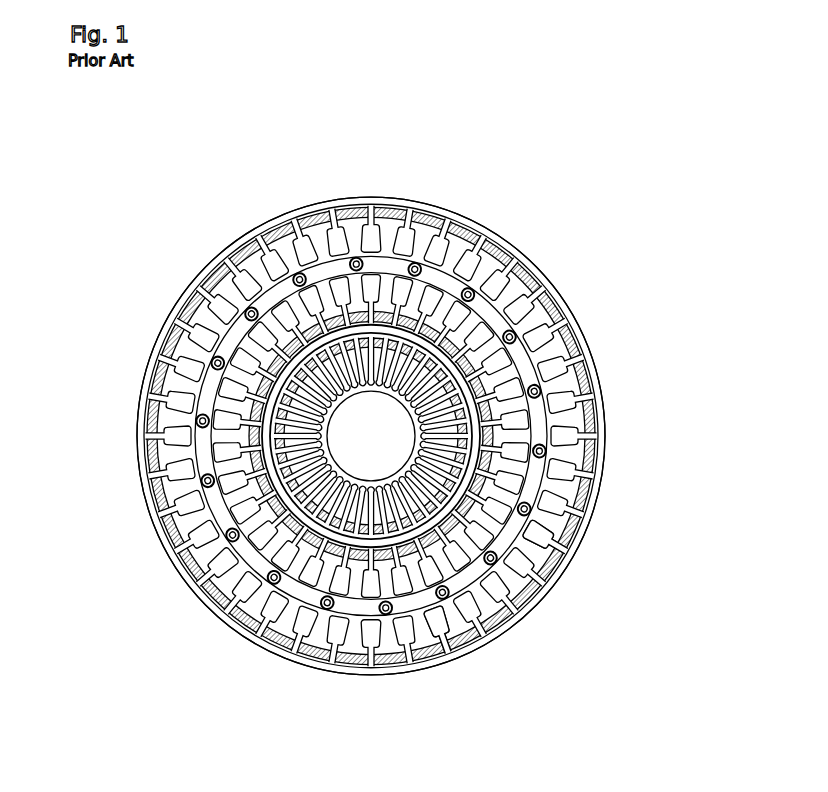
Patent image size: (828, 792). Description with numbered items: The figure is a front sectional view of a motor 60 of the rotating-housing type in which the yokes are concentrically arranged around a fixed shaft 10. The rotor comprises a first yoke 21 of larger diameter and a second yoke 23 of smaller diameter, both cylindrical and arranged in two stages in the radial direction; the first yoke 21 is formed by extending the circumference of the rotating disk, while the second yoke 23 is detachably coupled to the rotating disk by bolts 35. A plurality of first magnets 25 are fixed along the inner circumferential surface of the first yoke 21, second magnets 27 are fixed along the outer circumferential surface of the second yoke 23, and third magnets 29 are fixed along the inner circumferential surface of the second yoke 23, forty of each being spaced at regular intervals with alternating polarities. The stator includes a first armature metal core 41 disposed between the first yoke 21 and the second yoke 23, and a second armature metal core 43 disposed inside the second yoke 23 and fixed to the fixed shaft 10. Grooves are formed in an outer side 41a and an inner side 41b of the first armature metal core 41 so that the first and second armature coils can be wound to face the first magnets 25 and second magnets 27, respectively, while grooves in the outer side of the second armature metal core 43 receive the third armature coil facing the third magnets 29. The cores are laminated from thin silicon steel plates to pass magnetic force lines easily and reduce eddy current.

The motor 60 is at (168, 140).
The fixed shaft 10 is at (362, 448).
The first yoke 21 is at (362, 672).
The second yoke 23 is at (455, 377).
The first magnets 25 is at (600, 452).
The second magnets 27 is at (272, 528).
The third magnets 29 is at (363, 347).
The bolts 35 is at (590, 370).
The first armature metal core 41 is at (543, 587).
The outer side of the first armature metal core 41a is at (552, 523).
The inner side of the first armature metal core 41b is at (450, 603).
The second armature metal core 43 is at (437, 348).